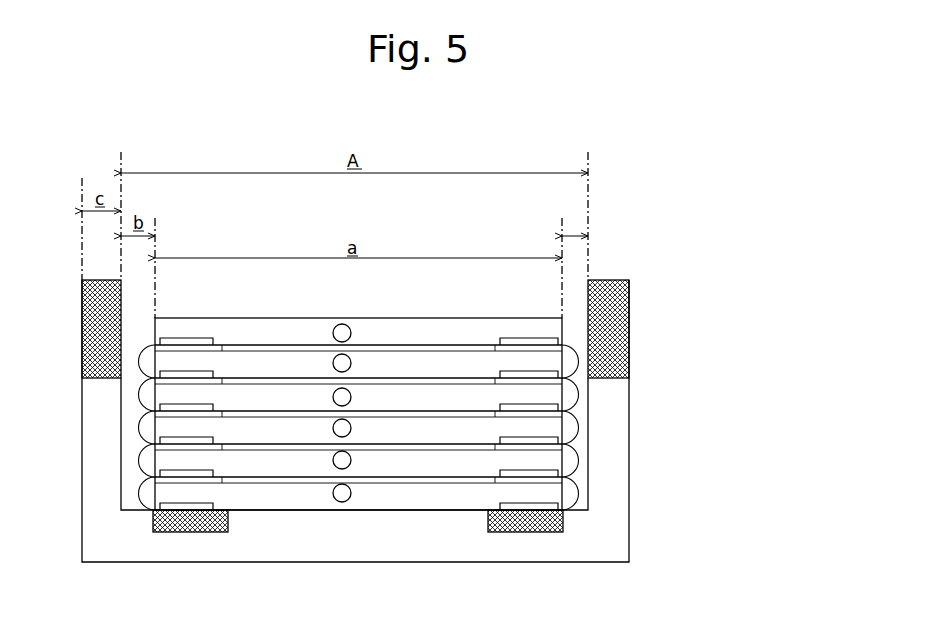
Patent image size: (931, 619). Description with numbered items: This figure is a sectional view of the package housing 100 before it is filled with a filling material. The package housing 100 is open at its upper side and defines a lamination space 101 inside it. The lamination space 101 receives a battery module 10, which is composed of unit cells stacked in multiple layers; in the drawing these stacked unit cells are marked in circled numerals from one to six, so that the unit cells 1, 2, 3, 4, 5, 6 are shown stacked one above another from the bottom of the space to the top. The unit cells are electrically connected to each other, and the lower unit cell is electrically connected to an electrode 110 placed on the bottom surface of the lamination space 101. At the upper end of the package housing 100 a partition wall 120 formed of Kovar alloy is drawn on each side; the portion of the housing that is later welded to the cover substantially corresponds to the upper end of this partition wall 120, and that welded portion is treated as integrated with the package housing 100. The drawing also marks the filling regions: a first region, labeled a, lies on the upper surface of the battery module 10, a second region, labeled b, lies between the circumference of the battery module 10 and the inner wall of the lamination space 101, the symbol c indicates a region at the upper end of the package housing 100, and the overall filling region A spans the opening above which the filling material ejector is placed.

The battery module 10 is at (456, 414).
The package housing 100 is at (614, 509).
The lamination space 101 is at (583, 441).
The electrode 110 is at (564, 531).
The partition wall 120 is at (612, 329).
The first electrode unit 1 is at (342, 493).
The second electrode unit 2 is at (342, 460).
The third electrode unit 3 is at (342, 428).
The fourth electrode unit 4 is at (342, 397).
The fifth electrode unit 5 is at (342, 363).
The sixth electrode unit 6 is at (342, 333).